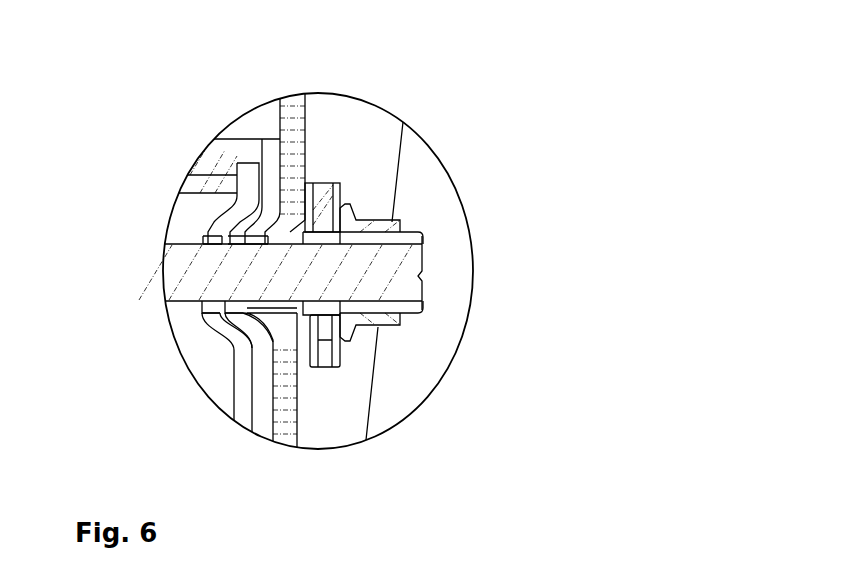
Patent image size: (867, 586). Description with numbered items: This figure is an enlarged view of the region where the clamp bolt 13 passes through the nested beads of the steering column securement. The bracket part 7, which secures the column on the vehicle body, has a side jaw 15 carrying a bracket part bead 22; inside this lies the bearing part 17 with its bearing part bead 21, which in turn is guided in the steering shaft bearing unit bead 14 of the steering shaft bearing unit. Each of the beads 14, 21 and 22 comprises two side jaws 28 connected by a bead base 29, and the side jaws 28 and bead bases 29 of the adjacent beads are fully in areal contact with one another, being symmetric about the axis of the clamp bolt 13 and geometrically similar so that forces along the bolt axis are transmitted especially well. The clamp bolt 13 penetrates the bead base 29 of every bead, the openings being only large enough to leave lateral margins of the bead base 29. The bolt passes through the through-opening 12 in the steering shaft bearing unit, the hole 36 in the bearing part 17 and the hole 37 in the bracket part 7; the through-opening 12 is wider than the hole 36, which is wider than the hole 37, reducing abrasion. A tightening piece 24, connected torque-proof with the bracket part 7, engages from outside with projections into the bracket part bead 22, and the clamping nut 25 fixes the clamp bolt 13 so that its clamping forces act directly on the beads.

The bracket part 7 is at (294, 140).
The through-opening 12 is at (210, 308).
The clamp bolt 13 is at (200, 258).
The steering shaft bearing unit bead 14 is at (212, 318).
The side jaw 15 is at (303, 160).
The bearing part 17 is at (262, 402).
The bearing part bead 21 is at (274, 395).
The bracket part bead 22 is at (303, 368).
The tightening piece 24 is at (320, 352).
The clamping nut 25 is at (385, 236).
The side jaws of bead 28 is at (268, 205).
The bead base 29 is at (232, 243).
The hole 36 is at (205, 333).
The hole 37 is at (345, 188).